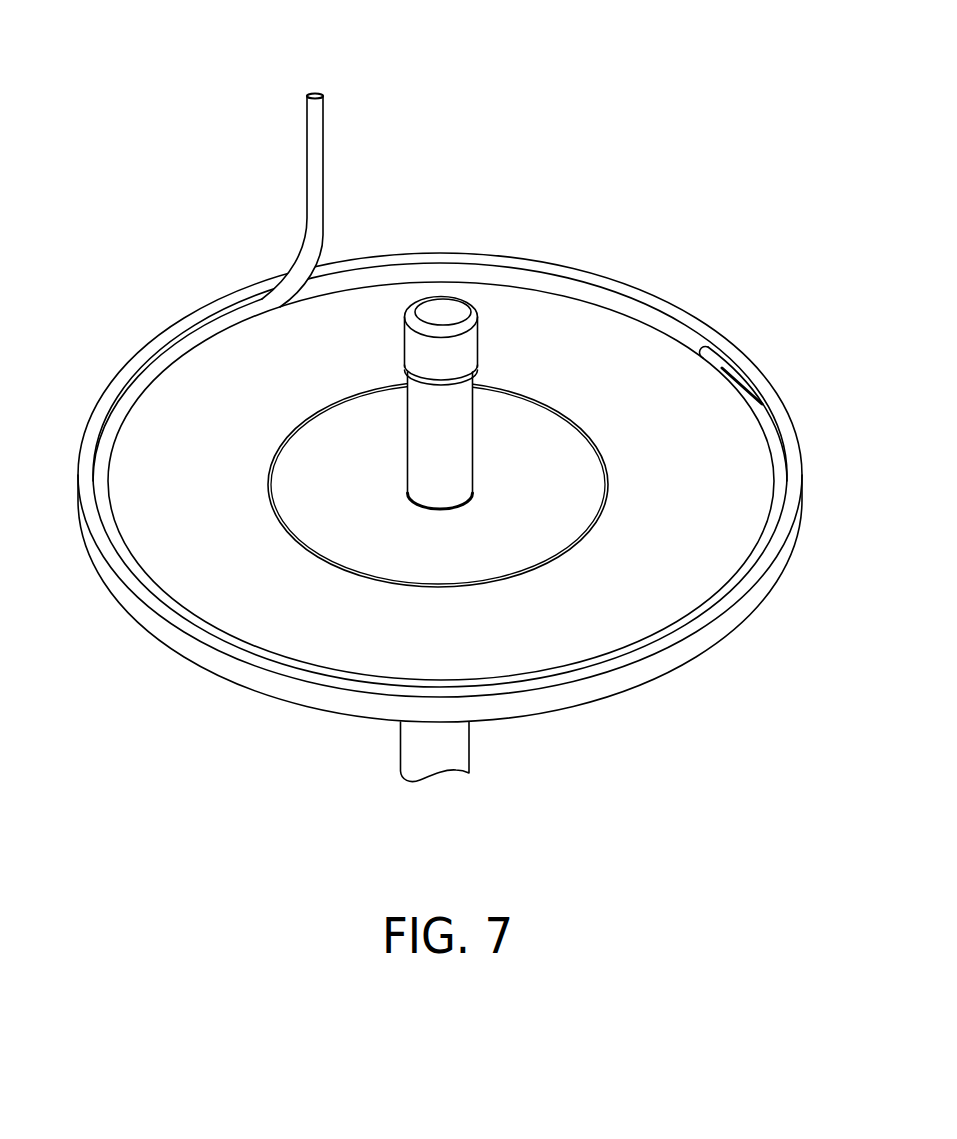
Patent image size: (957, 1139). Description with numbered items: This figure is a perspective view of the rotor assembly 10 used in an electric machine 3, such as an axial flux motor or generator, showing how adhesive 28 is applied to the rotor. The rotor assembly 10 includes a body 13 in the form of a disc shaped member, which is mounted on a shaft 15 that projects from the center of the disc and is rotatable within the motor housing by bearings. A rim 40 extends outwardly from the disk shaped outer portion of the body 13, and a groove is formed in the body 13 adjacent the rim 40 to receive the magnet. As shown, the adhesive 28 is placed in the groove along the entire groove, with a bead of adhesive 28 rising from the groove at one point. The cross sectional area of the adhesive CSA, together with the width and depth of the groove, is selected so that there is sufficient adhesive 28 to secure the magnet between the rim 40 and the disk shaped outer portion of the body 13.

The axial flux motor 3 is at (106, 107).
The rotor assembly 10 is at (215, 201).
The body 13 is at (287, 707).
The shaft 15 is at (472, 308).
The adhesive 28 is at (323, 176).
The rim 40 is at (800, 530).
The cross sectional area of the adhesive CSA is at (318, 93).